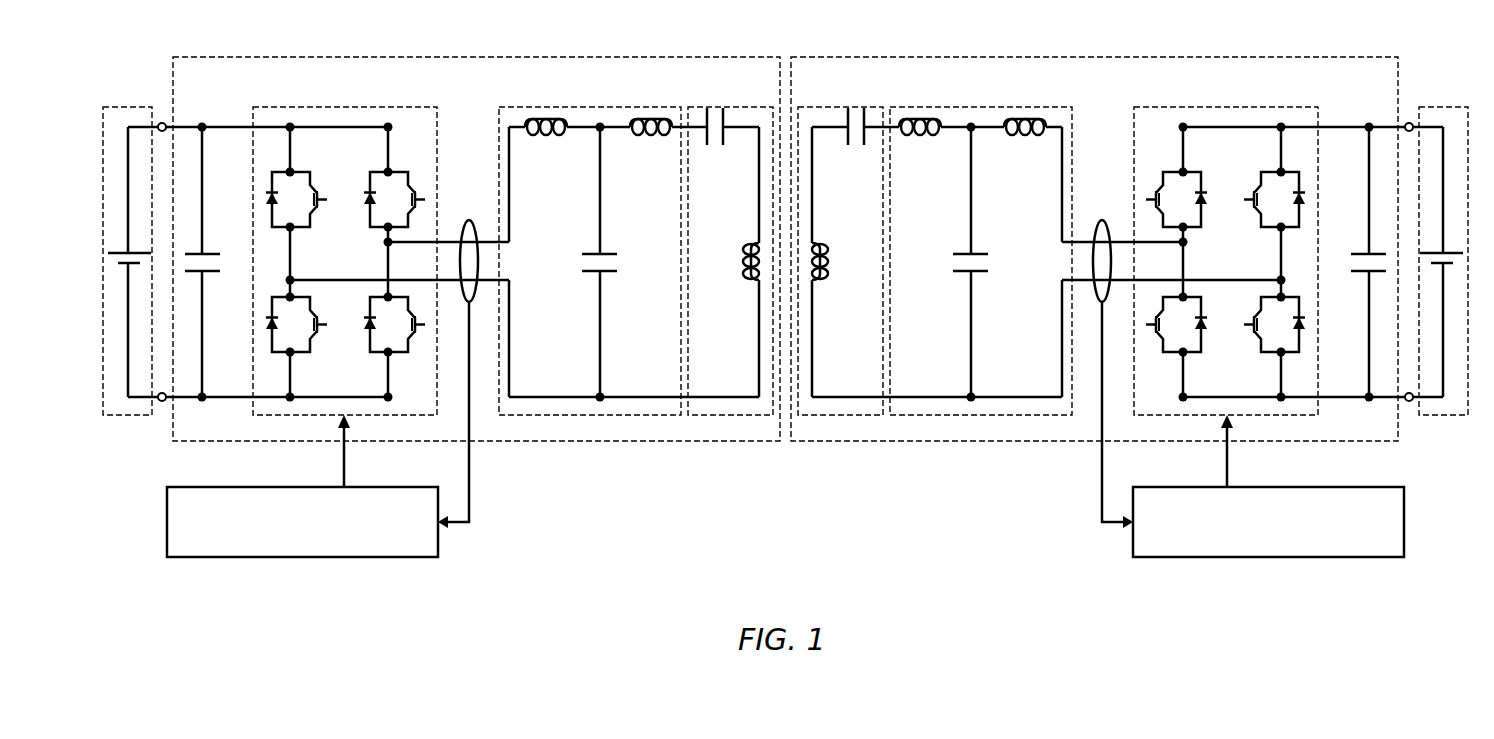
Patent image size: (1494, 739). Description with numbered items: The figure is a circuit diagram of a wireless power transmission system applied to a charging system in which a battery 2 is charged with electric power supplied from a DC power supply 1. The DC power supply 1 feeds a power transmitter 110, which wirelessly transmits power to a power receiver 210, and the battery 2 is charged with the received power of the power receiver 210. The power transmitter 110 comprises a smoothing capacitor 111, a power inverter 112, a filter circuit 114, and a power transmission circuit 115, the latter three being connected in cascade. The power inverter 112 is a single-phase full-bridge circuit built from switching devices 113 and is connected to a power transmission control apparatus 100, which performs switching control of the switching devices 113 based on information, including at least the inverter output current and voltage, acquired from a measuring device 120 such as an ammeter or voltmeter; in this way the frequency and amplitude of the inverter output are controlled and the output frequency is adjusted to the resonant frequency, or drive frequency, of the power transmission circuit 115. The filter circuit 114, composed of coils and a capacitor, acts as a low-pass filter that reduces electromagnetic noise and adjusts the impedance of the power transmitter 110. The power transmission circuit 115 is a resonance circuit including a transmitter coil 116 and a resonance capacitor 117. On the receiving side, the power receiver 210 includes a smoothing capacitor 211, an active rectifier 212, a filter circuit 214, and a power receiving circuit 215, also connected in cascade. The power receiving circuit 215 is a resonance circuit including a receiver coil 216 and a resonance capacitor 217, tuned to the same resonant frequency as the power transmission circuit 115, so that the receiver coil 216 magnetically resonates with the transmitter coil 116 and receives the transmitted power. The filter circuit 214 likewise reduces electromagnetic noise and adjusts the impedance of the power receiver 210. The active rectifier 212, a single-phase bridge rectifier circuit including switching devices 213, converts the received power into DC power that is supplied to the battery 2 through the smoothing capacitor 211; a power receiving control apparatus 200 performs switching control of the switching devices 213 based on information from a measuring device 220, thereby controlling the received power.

The DC power supply 1 is at (120, 106).
The battery 2 is at (1440, 106).
The power transmission control apparatus 100 is at (185, 487).
The power transmitter 110 is at (190, 57).
The smoothing capacitor 111 is at (219, 242).
The power inverter 112 is at (273, 107).
The switching devices 113 is at (317, 170).
The filter circuit 114 is at (518, 106).
The power transmission circuit 115 is at (720, 241).
The transmitter coil 116 is at (739, 288).
The resonance capacitor 117 is at (715, 160).
The measuring device 120 is at (469, 220).
The power receiving control apparatus 200 is at (1404, 486).
The power receiver 210 is at (1397, 56).
The smoothing capacitor 211 is at (1352, 242).
The active rectifier 212 is at (1313, 107).
The switching devices 213 is at (1156, 170).
The filter circuit 214 is at (1052, 106).
The power receiving circuit 215 is at (851, 241).
The receiver coil 216 is at (834, 288).
The resonance capacitor 217 is at (856, 160).
The measuring device 220 is at (1102, 220).